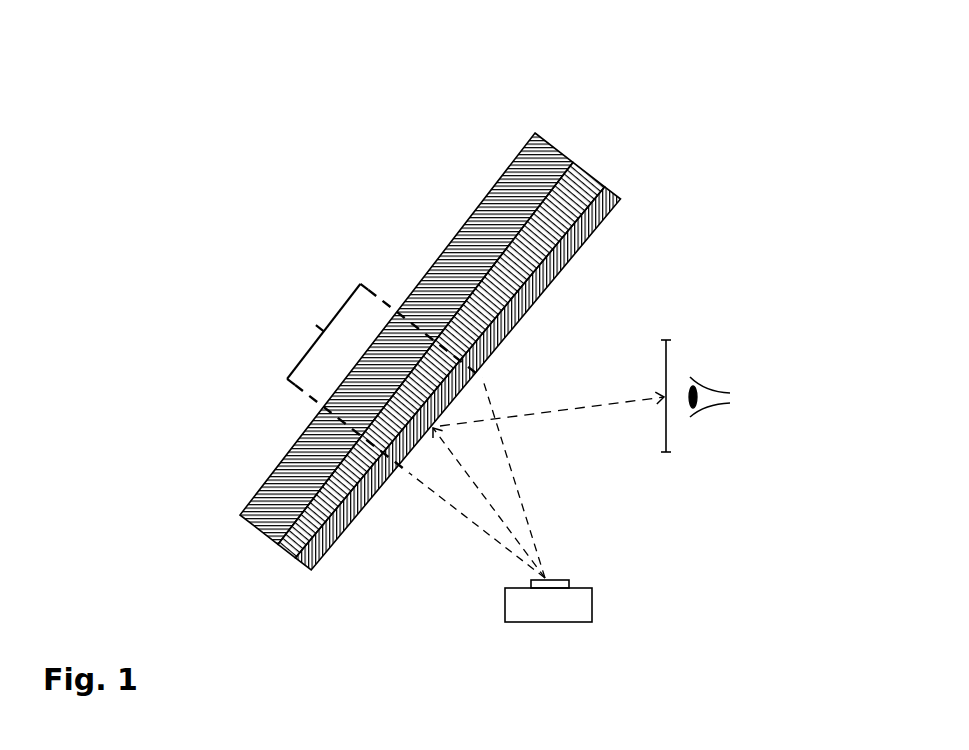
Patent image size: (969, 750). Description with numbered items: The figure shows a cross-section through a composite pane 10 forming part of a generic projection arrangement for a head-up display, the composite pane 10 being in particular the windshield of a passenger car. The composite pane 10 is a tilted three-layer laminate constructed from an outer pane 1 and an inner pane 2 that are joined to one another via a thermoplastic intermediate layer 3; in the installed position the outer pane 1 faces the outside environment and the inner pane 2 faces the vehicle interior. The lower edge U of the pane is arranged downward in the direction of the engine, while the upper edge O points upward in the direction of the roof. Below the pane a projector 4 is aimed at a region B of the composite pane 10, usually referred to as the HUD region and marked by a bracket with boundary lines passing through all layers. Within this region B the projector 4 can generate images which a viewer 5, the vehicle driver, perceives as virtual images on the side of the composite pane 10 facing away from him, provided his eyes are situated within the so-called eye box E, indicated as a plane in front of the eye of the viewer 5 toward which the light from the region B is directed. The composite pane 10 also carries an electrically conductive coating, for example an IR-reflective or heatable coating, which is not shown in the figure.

The composite pane 10 is at (500, 113).
The outer pane 1 is at (480, 210).
The thermoplastic intermediate layer 3 is at (572, 193).
The inner pane 2 is at (603, 210).
The projector 4 is at (572, 608).
The viewer 5 is at (727, 375).
The eye box E is at (682, 355).
The region B is at (384, 378).
The upper edge O is at (567, 115).
The lower edge U is at (270, 574).